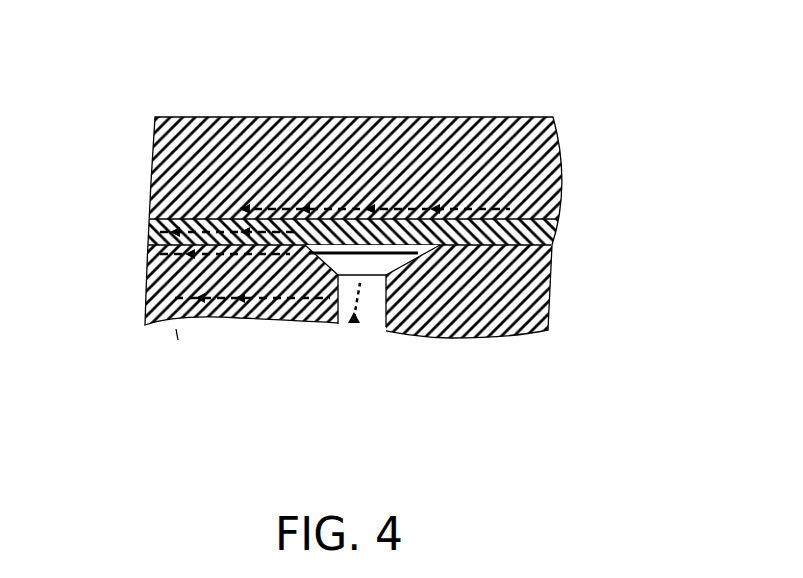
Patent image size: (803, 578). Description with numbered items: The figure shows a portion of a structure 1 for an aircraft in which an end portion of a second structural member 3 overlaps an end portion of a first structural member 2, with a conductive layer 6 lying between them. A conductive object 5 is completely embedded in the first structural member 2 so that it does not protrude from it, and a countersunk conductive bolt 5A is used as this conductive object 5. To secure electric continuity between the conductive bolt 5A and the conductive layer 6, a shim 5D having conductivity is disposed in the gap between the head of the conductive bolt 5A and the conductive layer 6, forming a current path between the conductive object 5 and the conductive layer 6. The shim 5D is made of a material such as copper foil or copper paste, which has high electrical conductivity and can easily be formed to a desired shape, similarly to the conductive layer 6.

The structure 1 is at (617, 60).
The first structural member 2 is at (510, 332).
The second structural member 3 is at (490, 117).
The conductive object 5 is at (348, 318).
The conductive bolt 5A is at (373, 320).
The shim 5D is at (400, 256).
The conductive layer 6 is at (150, 232).